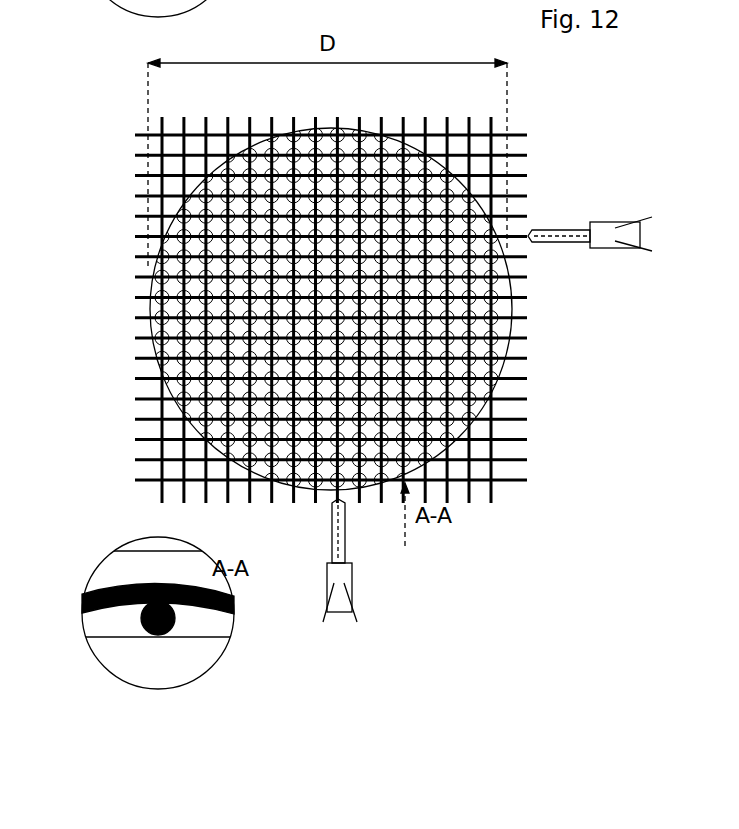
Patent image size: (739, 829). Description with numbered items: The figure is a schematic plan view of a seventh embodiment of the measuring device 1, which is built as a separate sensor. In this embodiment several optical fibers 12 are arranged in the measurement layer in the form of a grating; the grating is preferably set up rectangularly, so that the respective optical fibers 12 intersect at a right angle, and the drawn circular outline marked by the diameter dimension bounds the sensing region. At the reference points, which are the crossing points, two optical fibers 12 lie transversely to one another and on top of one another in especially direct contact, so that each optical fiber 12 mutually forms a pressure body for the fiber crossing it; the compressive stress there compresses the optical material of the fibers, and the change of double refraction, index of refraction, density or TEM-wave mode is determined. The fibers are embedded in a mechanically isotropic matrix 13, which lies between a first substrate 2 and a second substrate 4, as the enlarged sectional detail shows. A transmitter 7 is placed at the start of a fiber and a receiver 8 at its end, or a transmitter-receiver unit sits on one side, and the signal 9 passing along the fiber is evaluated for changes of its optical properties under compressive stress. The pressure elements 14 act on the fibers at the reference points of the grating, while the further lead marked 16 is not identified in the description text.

The measuring device 1 is at (322, 390).
The first substrate 2 is at (115, 643).
The second substrate 4 is at (167, 543).
The transmitter 7 is at (502, 426).
The receiver 8 is at (492, 434).
The signal 9 is at (340, 518).
The optical fiber 12 is at (150, 418).
The matrix 13 is at (90, 625).
The pressure elements 14 is at (483, 415).
The transverse wire 16 is at (138, 175).